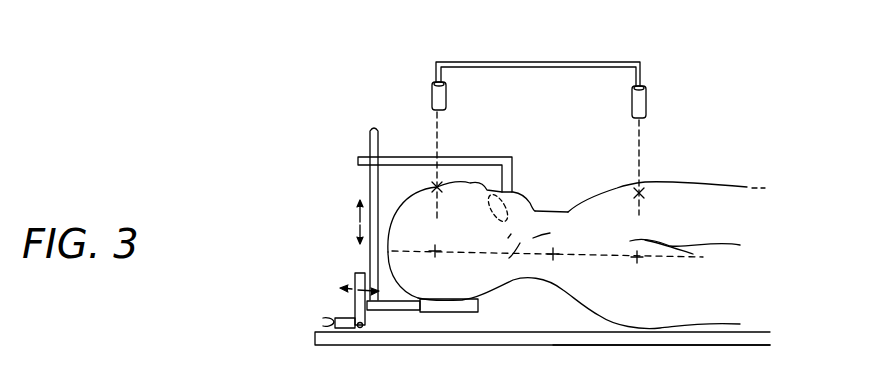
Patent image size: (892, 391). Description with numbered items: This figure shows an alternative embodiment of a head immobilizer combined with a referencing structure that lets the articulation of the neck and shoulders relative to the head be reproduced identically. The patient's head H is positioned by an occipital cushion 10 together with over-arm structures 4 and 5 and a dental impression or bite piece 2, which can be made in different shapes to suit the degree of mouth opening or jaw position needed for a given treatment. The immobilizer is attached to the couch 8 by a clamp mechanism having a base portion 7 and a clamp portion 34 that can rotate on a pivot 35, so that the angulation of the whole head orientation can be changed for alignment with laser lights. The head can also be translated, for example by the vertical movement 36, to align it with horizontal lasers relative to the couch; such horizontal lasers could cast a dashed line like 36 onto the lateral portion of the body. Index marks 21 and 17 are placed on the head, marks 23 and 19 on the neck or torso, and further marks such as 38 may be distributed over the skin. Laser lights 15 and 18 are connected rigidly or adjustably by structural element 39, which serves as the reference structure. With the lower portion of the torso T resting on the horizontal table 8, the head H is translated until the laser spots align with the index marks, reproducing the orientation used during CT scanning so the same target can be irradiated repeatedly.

The bite piece 2 is at (534, 202).
The over-arm structure 4 is at (402, 157).
The over-arm structure 5 is at (369, 183).
The base portion 7 is at (328, 323).
The couch 8 is at (553, 345).
The occipital cushion 10 is at (467, 308).
The laser light 15 is at (431, 90).
The index mark 17 is at (437, 186).
The laser light 18 is at (647, 97).
The index mark 19 is at (643, 190).
The index mark 21 is at (437, 253).
The index mark 23 is at (637, 258).
The clamp portion 34 is at (357, 296).
The pivot 35 is at (359, 327).
The translation movement 36 is at (358, 223).
The index mark 38 is at (554, 252).
The structural element 39 is at (542, 62).
The head H is at (413, 283).
The torso T is at (730, 306).